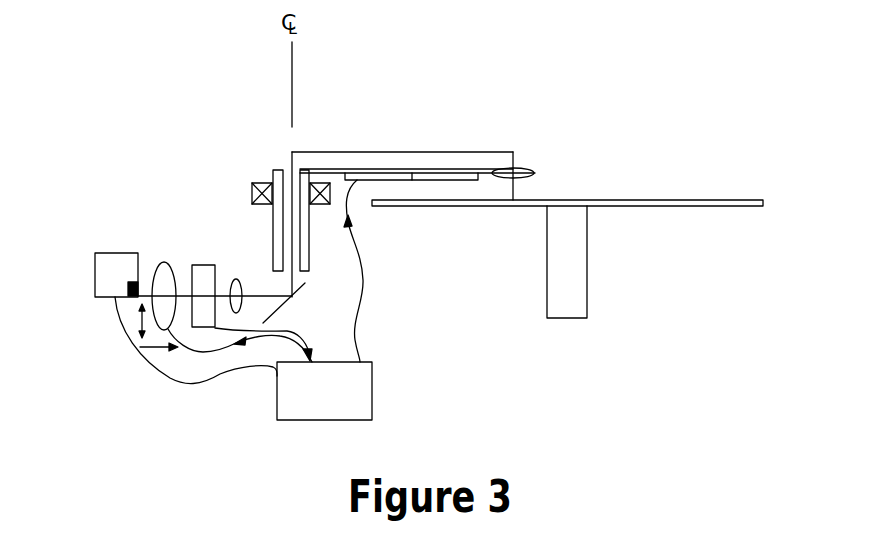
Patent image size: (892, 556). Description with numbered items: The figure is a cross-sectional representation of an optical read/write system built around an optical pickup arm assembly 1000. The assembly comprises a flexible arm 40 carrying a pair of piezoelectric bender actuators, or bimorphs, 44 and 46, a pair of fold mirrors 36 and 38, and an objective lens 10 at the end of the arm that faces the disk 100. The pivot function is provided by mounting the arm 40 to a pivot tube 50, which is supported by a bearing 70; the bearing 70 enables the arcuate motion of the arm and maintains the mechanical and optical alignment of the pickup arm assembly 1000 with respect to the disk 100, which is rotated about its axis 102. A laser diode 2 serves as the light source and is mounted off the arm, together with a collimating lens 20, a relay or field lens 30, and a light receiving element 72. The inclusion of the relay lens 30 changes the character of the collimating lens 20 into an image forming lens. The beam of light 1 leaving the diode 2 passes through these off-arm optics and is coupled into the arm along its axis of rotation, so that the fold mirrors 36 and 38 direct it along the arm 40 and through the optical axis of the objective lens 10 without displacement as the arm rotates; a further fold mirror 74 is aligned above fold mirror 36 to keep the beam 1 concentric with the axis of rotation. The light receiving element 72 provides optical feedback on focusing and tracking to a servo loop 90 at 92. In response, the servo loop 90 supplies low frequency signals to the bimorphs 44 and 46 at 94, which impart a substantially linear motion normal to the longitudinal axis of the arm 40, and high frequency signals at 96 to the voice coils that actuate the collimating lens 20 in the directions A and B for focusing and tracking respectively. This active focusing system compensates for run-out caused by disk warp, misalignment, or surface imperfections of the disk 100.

The beam of light 1 is at (415, 151).
The optical pickup arm assembly 1000 is at (368, 120).
The laser diode 2 is at (105, 272).
The objective lens 10 is at (535, 173).
The collimating lens 20 is at (163, 273).
The relay lens 30 is at (237, 280).
The fold mirror 36 is at (307, 135).
The fold mirror 38 is at (533, 173).
The flexible arm 40 is at (314, 150).
The piezoelectric bender actuator 44 is at (392, 181).
The piezoelectric bender actuator 46 is at (450, 181).
The pivot tube 50 is at (270, 223).
The bearing 70 is at (252, 188).
The light receiving element 72 is at (200, 275).
The fold mirror 74 is at (304, 286).
The servo loop 90 is at (372, 380).
The feedback signal 92 is at (290, 331).
The low frequency signals 94 is at (363, 277).
The high frequency signals 96 is at (198, 353).
The disk 100 is at (683, 199).
The axis 102 is at (575, 282).
The direction A is at (152, 352).
The direction B is at (133, 318).